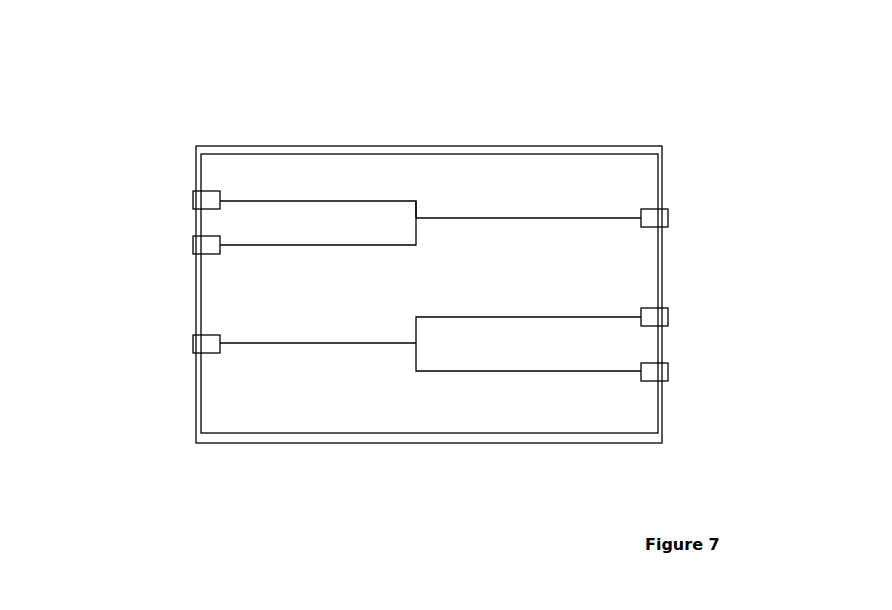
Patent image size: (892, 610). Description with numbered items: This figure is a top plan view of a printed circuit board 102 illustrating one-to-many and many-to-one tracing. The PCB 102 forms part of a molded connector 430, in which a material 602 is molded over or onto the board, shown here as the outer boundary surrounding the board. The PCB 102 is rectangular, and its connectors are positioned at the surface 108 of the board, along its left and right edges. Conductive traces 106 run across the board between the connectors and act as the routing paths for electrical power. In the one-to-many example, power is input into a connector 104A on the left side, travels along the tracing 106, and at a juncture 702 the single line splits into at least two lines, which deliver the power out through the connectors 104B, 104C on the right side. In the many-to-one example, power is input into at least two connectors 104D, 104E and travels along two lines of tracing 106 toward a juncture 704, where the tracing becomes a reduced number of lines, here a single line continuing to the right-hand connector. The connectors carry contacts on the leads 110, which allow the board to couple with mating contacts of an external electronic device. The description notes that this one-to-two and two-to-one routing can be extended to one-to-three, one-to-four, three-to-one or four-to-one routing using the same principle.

The molded connector 430 is at (532, 84).
The molded material 602 is at (280, 147).
The surface of the PCB 108 is at (361, 165).
The printed circuit board 102 is at (346, 380).
The traces 106 is at (598, 218).
The juncture 704 is at (416, 218).
The juncture 702 is at (416, 343).
The connector 104A is at (196, 345).
The connector 104B is at (660, 371).
The connector 104C is at (660, 318).
The connector 104D is at (197, 197).
The connector 104E is at (196, 243).
The contacts on the leads 110 is at (667, 317).